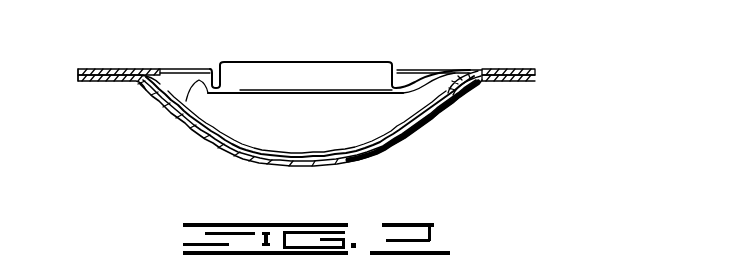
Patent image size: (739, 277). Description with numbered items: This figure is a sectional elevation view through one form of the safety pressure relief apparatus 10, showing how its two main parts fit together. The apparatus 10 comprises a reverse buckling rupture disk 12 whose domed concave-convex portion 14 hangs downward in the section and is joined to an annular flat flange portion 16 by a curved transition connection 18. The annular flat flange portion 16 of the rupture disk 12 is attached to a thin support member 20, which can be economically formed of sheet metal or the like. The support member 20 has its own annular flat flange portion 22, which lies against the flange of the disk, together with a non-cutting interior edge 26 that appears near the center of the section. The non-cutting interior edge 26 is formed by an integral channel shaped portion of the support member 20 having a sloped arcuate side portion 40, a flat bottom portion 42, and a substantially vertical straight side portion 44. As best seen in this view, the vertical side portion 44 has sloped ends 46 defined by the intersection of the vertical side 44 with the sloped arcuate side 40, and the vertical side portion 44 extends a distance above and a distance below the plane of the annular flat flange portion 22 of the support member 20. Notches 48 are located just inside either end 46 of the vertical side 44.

The safety pressure relief apparatus 10 is at (483, 50).
The reverse buckling rupture disk 12 is at (188, 136).
The concave-convex portion 14 is at (241, 162).
The annular flat flange portion 16 is at (91, 86).
The curved transition connection 18 is at (134, 82).
The support member 20 is at (88, 68).
The annular flat flange portion 22 is at (108, 68).
The non-cutting interior edge 26 is at (324, 57).
The sloped arcuate side portion 40 is at (408, 77).
The flat bottom portion 42 is at (310, 95).
The vertical straight side portion 44 is at (262, 79).
The sloped ends 46 is at (188, 100).
The notches 48 is at (214, 87).